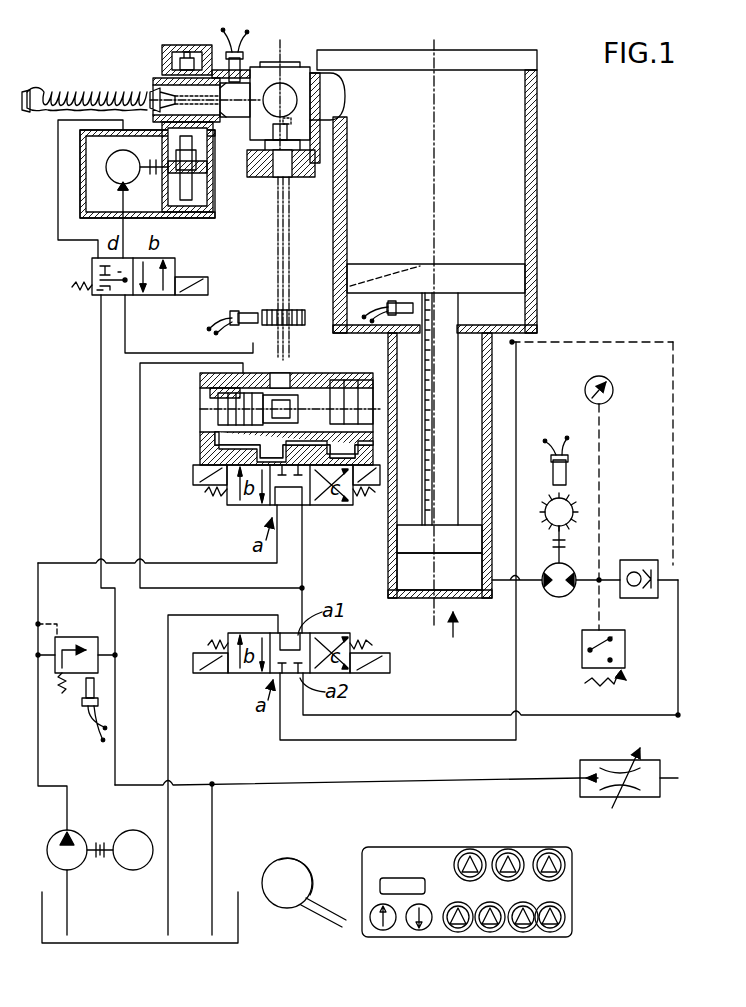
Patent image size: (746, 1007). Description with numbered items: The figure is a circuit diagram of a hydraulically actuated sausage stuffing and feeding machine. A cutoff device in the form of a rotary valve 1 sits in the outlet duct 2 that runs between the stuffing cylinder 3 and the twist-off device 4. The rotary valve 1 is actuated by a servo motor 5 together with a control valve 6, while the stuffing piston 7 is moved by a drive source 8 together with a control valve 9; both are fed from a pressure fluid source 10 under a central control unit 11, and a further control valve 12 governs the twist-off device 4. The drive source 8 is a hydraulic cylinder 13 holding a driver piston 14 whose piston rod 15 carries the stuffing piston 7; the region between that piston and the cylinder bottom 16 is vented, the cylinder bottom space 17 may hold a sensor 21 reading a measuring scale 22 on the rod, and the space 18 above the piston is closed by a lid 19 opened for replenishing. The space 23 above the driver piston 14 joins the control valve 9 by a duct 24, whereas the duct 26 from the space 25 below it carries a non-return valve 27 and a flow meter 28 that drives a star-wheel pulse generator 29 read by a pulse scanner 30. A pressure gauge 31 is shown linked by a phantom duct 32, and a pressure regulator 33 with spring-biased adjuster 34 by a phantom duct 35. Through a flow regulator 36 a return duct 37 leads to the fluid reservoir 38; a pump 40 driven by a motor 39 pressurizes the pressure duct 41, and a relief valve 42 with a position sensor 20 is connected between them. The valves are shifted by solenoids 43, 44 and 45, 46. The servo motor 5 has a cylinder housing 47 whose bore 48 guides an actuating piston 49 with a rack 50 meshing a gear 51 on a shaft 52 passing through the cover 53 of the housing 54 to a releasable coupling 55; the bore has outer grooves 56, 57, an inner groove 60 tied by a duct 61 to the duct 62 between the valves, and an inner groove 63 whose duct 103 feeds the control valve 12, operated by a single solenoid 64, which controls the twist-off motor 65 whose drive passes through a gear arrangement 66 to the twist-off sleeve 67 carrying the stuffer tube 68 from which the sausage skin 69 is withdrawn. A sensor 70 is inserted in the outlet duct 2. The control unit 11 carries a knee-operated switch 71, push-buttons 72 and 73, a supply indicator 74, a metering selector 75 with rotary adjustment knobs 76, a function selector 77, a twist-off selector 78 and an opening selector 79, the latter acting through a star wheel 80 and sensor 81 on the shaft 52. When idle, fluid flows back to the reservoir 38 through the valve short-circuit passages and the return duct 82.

The rotary valve 1 is at (288, 55).
The outlet duct 2 is at (335, 88).
The stuffing cylinder 3 is at (532, 193).
The twist-off device 4 is at (150, 68).
The servo motor 5 is at (188, 456).
The control valve 6 is at (203, 503).
The stuffing piston 7 is at (436, 278).
The drive source 8 is at (453, 652).
The control valve 9 is at (345, 632).
The pressure fluid source 10 is at (80, 866).
The central control unit 11 is at (582, 870).
The control valve 12 is at (88, 302).
The hydraulic cylinder 13 is at (389, 577).
The driver piston 14 is at (439, 539).
The piston rod 15 is at (446, 378).
The cylinder bottom 16 is at (467, 409).
The cylinder bottom space 17 is at (433, 308).
The space above piston 18 is at (483, 155).
The lid 19 is at (488, 60).
The position sensor 20 is at (84, 692).
The sensor 21 is at (412, 409).
The measuring scale 22 is at (430, 408).
The space above driver piston 23 is at (475, 428).
The duct 24 is at (514, 655).
The space below driver piston 25 is at (439, 571).
The duct 26 is at (678, 655).
The non-return valve 27 is at (626, 560).
The flow meter 28 is at (558, 597).
The pulse generator 29 is at (552, 500).
The pulse scanner 30 is at (567, 473).
The pressure gauge 31 is at (614, 397).
The duct 32 is at (603, 450).
The pressure regulator 33 is at (582, 655).
The spring-biased adjuster 34 is at (584, 682).
The duct 35 is at (605, 612).
The flow regulator 36 is at (648, 795).
The return duct 37 is at (335, 786).
The fluid reservoir 38 is at (146, 934).
The motor 39 is at (135, 832).
The pump 40 is at (76, 837).
The pressure duct 41 is at (40, 740).
The relief valve 42 is at (92, 663).
The solenoid 43 is at (202, 672).
The solenoid 44 is at (385, 668).
The solenoid 45 is at (195, 480).
The solenoid 46 is at (372, 488).
The cylinder housing 47 is at (208, 378).
The bore 48 is at (200, 446).
The actuating piston 49 is at (300, 362).
The rack 50 is at (240, 408).
The gear 51 is at (298, 406).
The shaft 52 is at (291, 258).
The cover 53 is at (298, 175).
The housing 54 is at (208, 150).
The releasable coupling 55 is at (300, 124).
The outer groove 56 is at (216, 398).
The outer groove 57 is at (340, 440).
The inner groove 60 is at (260, 372).
The duct 61 is at (140, 546).
The duct 62 is at (303, 598).
The inner groove 63 is at (333, 380).
The solenoid 64 is at (200, 278).
The twist-off motor 65 is at (136, 189).
The gear 66 is at (208, 192).
The twist-off sleeve 67 is at (160, 82).
The stuffer tube 68 is at (33, 108).
The sausage skin 69 is at (92, 90).
The sensor 70 is at (242, 70).
The knee-operated switch 71 is at (290, 905).
The push-button 72 is at (388, 926).
The push-button 73 is at (422, 926).
The supply indicator 74 is at (400, 880).
The metering selector 75 is at (548, 930).
The rotary adjustment knobs 76 is at (487, 930).
The function selector 77 is at (470, 855).
The twist-off selector 78 is at (508, 855).
The opening selector 79 is at (549, 855).
The star wheel 80 is at (306, 316).
The sensor 81 is at (250, 314).
The return duct 82 is at (165, 628).
The duct 103 is at (165, 352).